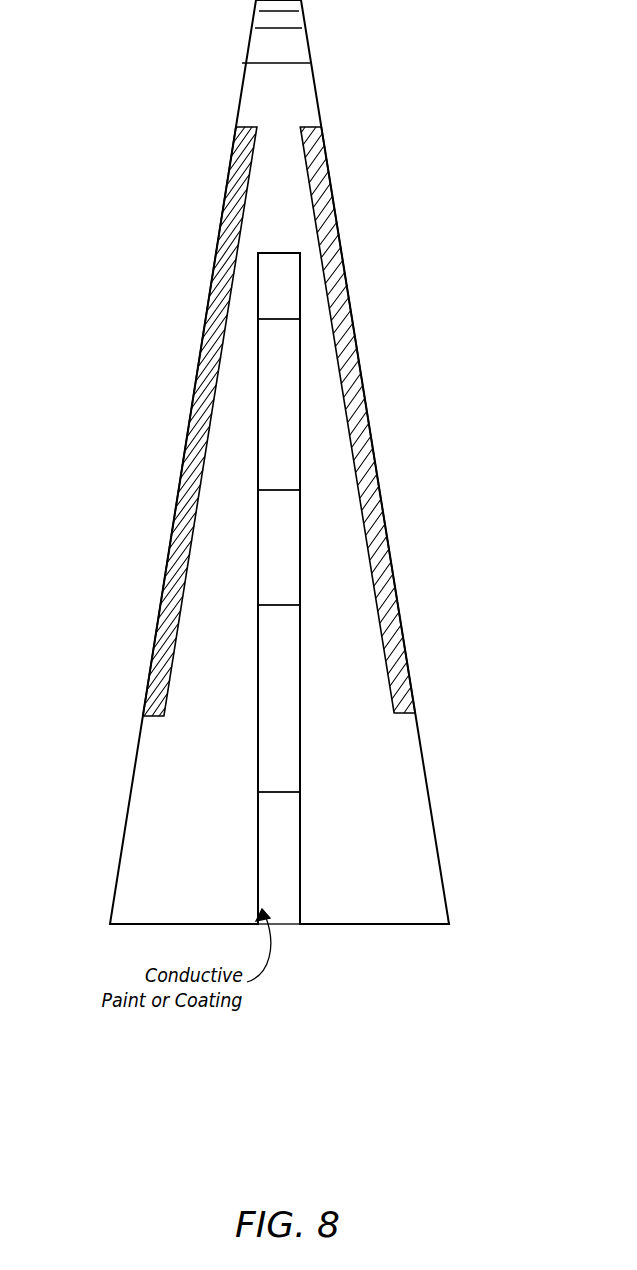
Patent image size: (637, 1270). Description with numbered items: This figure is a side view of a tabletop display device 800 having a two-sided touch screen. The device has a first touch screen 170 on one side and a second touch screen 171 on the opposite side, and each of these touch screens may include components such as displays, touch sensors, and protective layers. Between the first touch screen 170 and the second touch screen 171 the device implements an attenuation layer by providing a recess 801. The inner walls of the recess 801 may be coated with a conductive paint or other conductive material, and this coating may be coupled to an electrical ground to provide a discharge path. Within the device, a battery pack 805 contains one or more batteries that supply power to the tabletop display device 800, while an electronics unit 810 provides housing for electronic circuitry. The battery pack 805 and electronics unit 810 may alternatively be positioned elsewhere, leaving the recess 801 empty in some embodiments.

The tabletop display device 800 is at (307, 89).
The first touch screen 170 is at (213, 293).
The second touch screen 171 is at (353, 297).
The battery pack 805 is at (262, 410).
The electronics unit 810 is at (263, 645).
The recess 801 is at (278, 843).